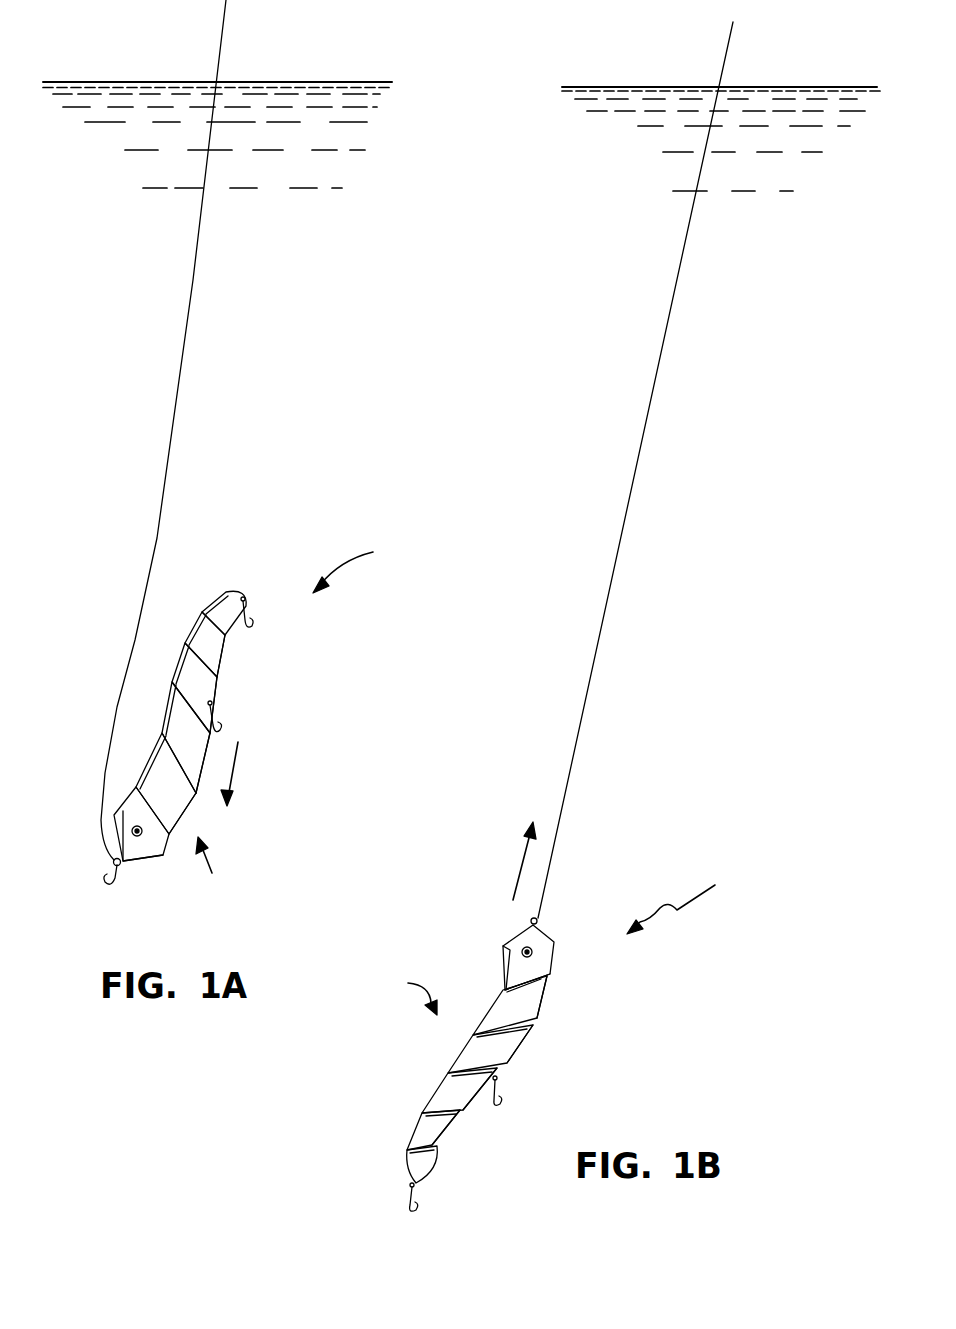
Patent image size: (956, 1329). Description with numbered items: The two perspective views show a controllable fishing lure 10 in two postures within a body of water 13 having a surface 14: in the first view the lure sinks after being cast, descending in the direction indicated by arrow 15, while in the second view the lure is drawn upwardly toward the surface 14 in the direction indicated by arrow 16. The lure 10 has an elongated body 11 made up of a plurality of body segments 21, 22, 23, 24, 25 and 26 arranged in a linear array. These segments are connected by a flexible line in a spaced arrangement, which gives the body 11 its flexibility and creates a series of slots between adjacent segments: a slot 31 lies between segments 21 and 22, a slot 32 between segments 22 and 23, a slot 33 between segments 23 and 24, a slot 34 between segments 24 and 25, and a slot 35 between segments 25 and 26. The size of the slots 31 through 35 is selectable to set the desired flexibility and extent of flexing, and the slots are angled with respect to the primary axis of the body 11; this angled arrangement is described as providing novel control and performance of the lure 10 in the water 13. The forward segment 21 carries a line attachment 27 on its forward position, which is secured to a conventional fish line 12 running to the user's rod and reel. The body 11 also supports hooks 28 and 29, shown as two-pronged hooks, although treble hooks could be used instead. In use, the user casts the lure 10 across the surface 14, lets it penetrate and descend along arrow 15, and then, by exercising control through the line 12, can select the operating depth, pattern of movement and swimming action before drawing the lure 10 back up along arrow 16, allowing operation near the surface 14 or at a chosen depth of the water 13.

In FIG. 1A, the fishing lure 10 is at (357, 564).
In FIG. 1B, the fishing lure 10 is at (688, 899).
In FIG. 1A, the elongated body 11 is at (222, 870).
In FIG. 1B, the elongated body 11 is at (410, 990).
In FIG. 1A, the fish line 12 is at (189, 343).
In FIG. 1B, the fish line 12 is at (723, 70).
In FIG. 1A, the body of water 13 is at (142, 255).
In FIG. 1A, the surface 14 is at (312, 84).
In FIG. 1B, the surface 14 is at (830, 86).
In FIG. 1A, the arrow 15 is at (237, 770).
In FIG. 1B, the arrow 16 is at (522, 863).
In FIG. 1A, the body segment 21 is at (142, 862).
In FIG. 1B, the body segment 21 is at (503, 960).
In FIG. 1A, the body segment 22 is at (153, 757).
In FIG. 1B, the body segment 22 is at (480, 1010).
In FIG. 1A, the body segment 23 is at (162, 717).
In FIG. 1B, the body segment 23 is at (455, 1055).
In FIG. 1A, the body segment 24 is at (170, 662).
In FIG. 1B, the body segment 24 is at (420, 1097).
In FIG. 1A, the body segment 25 is at (192, 612).
In FIG. 1B, the body segment 25 is at (405, 1140).
In FIG. 1A, the body segment 26 is at (220, 593).
In FIG. 1B, the body segment 26 is at (400, 1175).
In FIG. 1A, the line attachment 27 is at (113, 870).
In FIG. 1B, the line attachment 27 is at (540, 918).
In FIG. 1A, the hook 28 is at (227, 723).
In FIG. 1B, the hook 28 is at (505, 1082).
In FIG. 1A, the hook 29 is at (245, 618).
In FIG. 1B, the hook 29 is at (415, 1210).
In FIG. 1A, the slot 31 is at (168, 847).
In FIG. 1B, the slot 31 is at (552, 968).
In FIG. 1A, the slot 32 is at (197, 800).
In FIG. 1B, the slot 32 is at (540, 1022).
In FIG. 1A, the slot 33 is at (190, 690).
In FIG. 1B, the slot 33 is at (500, 1073).
In FIG. 1A, the slot 34 is at (213, 672).
In FIG. 1B, the slot 34 is at (460, 1113).
In FIG. 1A, the slot 35 is at (223, 640).
In FIG. 1B, the slot 35 is at (440, 1148).